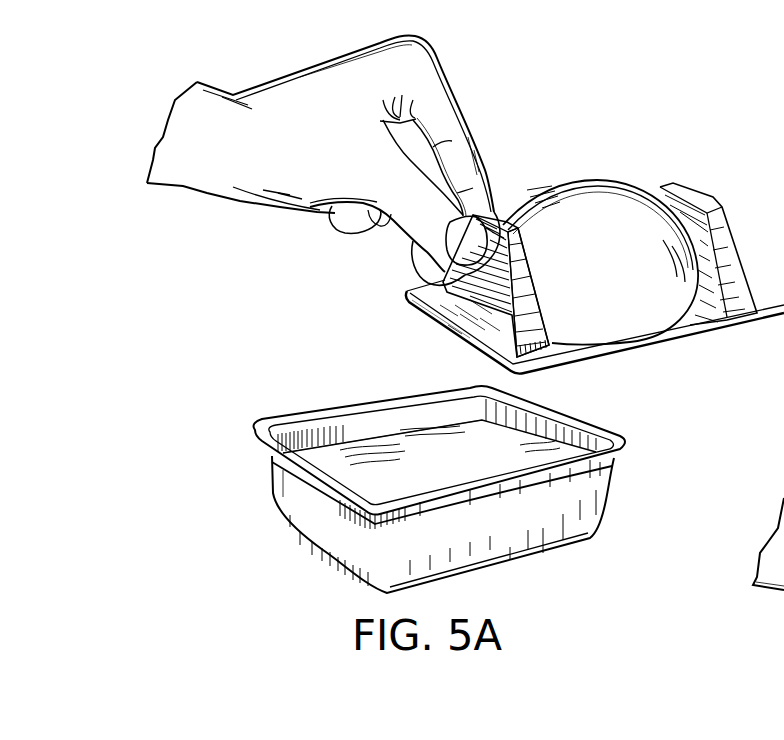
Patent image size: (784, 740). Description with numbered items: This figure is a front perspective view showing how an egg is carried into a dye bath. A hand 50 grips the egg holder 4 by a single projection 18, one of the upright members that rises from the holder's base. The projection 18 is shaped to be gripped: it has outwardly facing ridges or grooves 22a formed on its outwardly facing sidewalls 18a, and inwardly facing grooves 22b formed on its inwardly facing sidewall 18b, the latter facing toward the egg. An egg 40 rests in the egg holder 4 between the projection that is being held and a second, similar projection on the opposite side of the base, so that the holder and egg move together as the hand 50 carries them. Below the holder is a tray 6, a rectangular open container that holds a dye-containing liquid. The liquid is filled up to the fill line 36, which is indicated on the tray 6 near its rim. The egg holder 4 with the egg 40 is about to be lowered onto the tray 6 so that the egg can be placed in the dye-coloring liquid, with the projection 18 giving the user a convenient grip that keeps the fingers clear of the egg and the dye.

The egg holder 4 is at (722, 184).
The tray 6 is at (593, 533).
The projection 18 is at (563, 255).
The outwardly facing sidewalls 18a is at (467, 317).
The inwardly facing sidewall 18b is at (540, 322).
The outwardly facing ridges or grooves 22a is at (447, 278).
The inwardly facing grooves 22b is at (528, 273).
The fill line 36 is at (337, 437).
The egg 40 is at (593, 190).
The hand 50 is at (410, 57).